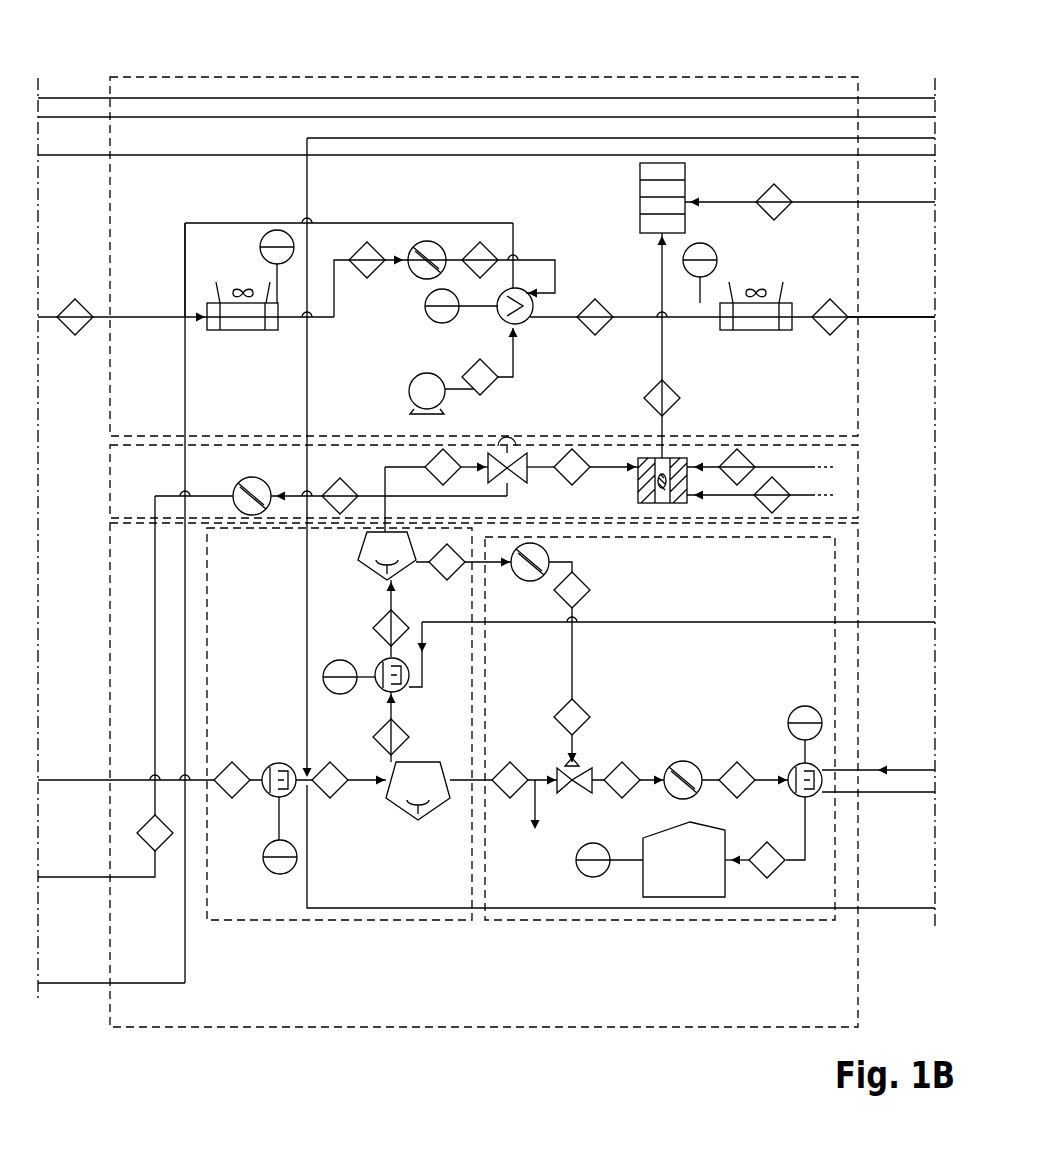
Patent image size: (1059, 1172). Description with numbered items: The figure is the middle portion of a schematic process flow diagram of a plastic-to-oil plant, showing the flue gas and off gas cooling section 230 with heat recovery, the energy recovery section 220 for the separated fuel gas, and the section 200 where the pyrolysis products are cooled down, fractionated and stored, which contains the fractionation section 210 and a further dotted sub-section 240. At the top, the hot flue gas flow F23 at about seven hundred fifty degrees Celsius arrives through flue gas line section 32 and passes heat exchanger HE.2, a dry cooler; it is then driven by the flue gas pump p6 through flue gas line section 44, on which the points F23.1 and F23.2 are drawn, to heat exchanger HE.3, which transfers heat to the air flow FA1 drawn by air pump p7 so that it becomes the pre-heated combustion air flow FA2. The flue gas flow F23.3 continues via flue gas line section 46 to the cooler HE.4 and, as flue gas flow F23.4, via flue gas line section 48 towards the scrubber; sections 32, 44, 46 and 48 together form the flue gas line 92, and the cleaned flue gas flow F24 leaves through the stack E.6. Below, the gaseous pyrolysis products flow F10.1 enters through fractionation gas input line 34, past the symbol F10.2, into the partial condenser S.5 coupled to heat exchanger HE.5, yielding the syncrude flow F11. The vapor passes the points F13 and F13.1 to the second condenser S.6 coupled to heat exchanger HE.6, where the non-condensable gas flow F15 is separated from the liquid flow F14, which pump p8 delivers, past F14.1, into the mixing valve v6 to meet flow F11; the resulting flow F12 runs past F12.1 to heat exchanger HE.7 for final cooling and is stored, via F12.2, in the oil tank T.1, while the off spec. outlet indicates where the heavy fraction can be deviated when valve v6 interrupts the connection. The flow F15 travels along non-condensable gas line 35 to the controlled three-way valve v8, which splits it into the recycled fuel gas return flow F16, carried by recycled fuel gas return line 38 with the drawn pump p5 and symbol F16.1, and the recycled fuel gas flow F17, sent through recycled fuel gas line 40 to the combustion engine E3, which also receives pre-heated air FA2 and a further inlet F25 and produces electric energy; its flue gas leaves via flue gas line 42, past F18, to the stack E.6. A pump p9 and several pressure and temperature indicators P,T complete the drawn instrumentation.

The flue gas and off gas cooling section 230 is at (545, 77).
The energy recovery section 220 is at (858, 452).
The cooling, fractionation and storage section 200 is at (858, 1000).
The fractionation section 210 is at (280, 920).
The oil/heavy hydrocarbon removal unit 240 is at (503, 920).
The flue gas line section 32 is at (150, 317).
The fractionation gas input line 34 is at (78, 780).
The non-condensable gas line 35 is at (385, 467).
The recycled fuel gas return line 38 is at (165, 496).
The recycled fuel gas line 40 is at (614, 466).
The flue gas line 42 is at (658, 358).
The flue gas line section 44 is at (340, 258).
The flue gas line section 46 is at (660, 310).
The flue gas line section 48 is at (830, 336).
The flue gas line 92 is at (333, 290).
The flue gas flow F23 is at (75, 336).
The valve F23.1 is at (367, 242).
The valve F23.2 is at (480, 242).
The flue gas flow F23.3 is at (595, 299).
The flue gas flow F23.4 is at (842, 306).
The cleaned flue gas flow F24 is at (786, 214).
The valve F25 is at (762, 513).
The non-condensable gas flow F15 is at (458, 451).
The recycled fuel gas return flow F16 is at (340, 478).
The valve F16.1 is at (163, 850).
The recycled fuel gas flow F17 is at (585, 480).
The valve F18 is at (674, 386).
The gaseous pyrolysis products flow F10.1 is at (225, 797).
The valve F10.2 is at (333, 763).
The condensed pyrolysis products flow F11 is at (510, 762).
The mixed flow F12 is at (632, 765).
The valve F12.1 is at (745, 763).
The valve F12.2 is at (777, 872).
The valve F13 is at (410, 737).
The valve F13.1 is at (374, 628).
The liquid phase flow F14 is at (460, 575).
The valve F14.1 is at (590, 590).
The heat exchanger HE.2 is at (240, 331).
The heat exchanger HE.3 is at (497, 326).
The heat exchanger HE.4 is at (748, 331).
The heat exchanger HE.5 is at (282, 762).
The heat exchanger HE.6 is at (411, 672).
The heat exchanger HE.7 is at (812, 800).
The stack E.6 is at (640, 198).
The combustion engine E3 is at (684, 457).
The air flow FA1 is at (498, 390).
The combustion air flow FA2 is at (747, 452).
The pump p5 is at (242, 479).
The flue gas pump p6 is at (428, 241).
The air pump p7 is at (409, 391).
The pump p8 is at (548, 553).
The pump p9 is at (690, 762).
The mixing valve v6 is at (580, 764).
The controlled three-way valve v8 is at (520, 483).
The partial condenser S.5 is at (390, 810).
The second condenser S.6 is at (368, 568).
The oil tank T.1 is at (684, 859).
The pressure and temperature sensor P,T is at (278, 229).
The off-specification outlet off spec. is at (538, 805).